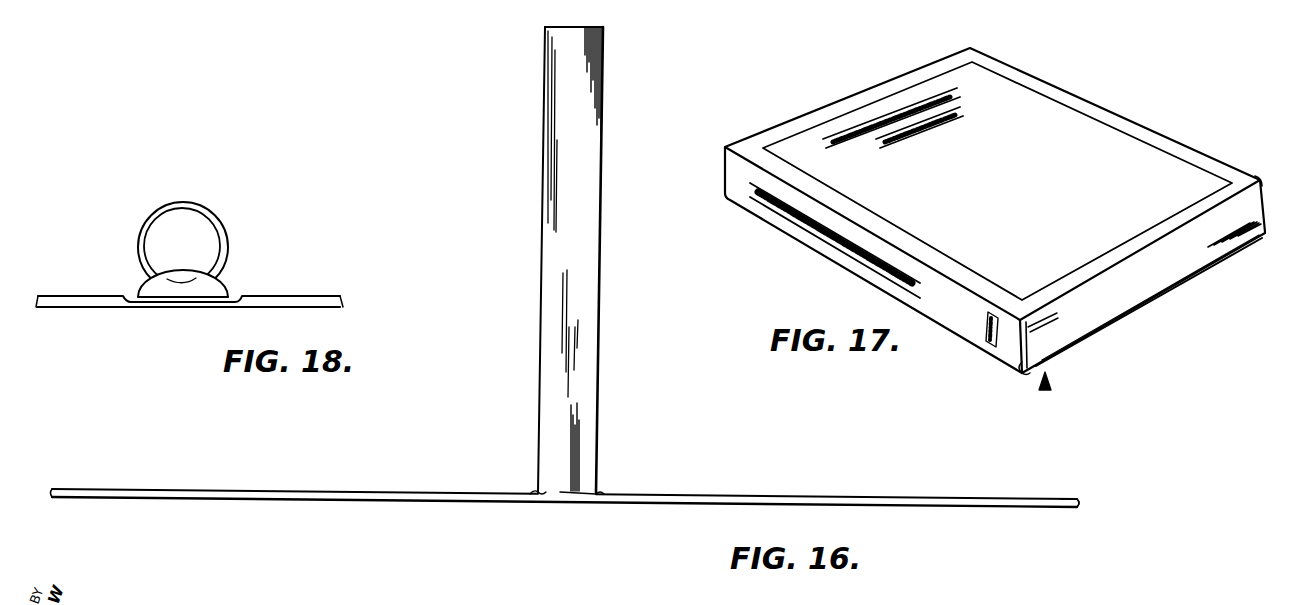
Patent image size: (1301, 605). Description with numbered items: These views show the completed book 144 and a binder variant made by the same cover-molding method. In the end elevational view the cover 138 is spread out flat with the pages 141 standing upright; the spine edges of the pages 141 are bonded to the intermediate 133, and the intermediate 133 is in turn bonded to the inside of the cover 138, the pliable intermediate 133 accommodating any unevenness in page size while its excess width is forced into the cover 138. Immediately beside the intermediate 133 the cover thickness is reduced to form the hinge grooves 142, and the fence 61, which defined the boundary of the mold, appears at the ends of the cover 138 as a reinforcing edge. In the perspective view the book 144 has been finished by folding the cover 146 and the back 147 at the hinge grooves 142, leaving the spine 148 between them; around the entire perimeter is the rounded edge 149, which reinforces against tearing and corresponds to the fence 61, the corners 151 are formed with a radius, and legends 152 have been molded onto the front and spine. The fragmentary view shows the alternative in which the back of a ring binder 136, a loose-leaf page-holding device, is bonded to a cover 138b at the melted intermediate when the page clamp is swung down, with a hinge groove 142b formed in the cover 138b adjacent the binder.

In FIG. 16, the fence 61 is at (1075, 503).
In FIG. 16, the intermediate 133 is at (565, 501).
In FIG. 18, the ring binder 136 is at (210, 288).
In FIG. 16, the cover 138 is at (948, 502).
In FIG. 18, the cover 138b is at (323, 304).
In FIG. 16, the pages 141 is at (582, 213).
In FIG. 17, the pages 141 is at (1160, 281).
In FIG. 16, the hinge grooves 142 is at (533, 499).
In FIG. 17, the hinge grooves 142 is at (1028, 378).
In FIG. 18, the hinge groove 142b is at (145, 306).
In FIG. 17, the book 144 is at (1046, 396).
In FIG. 17, the cover 146 is at (1082, 139).
In FIG. 17, the back 147 is at (1103, 336).
In FIG. 17, the spine 148 is at (978, 325).
In FIG. 17, the rounded edge 149 is at (1245, 246).
In FIG. 17, the corners 151 is at (1268, 231).
In FIG. 17, the legends 152 is at (935, 112).